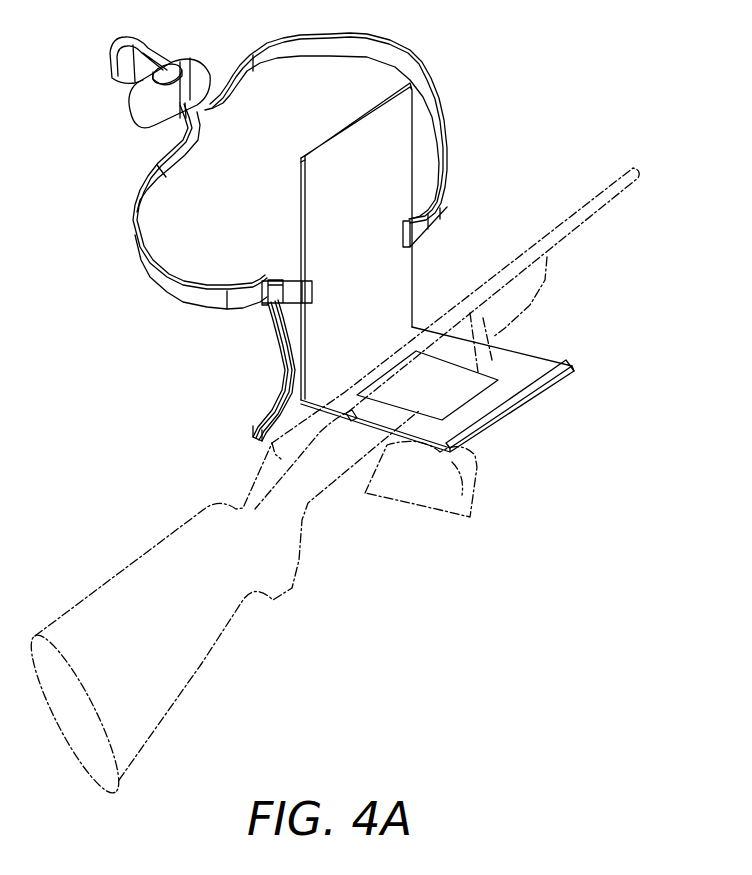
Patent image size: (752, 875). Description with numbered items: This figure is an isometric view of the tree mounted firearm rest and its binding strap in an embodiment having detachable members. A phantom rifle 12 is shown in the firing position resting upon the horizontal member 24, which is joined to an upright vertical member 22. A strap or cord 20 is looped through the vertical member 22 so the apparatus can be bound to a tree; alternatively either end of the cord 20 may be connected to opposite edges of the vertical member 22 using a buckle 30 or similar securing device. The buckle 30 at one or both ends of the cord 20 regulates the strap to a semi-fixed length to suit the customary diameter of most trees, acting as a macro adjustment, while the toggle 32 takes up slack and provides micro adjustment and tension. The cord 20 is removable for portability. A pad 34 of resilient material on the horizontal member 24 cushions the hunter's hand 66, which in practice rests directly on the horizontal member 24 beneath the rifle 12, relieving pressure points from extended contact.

The rifle 12 is at (202, 664).
The strap or cord 20 is at (372, 47).
The vertical member 22 is at (322, 232).
The horizontal member 24 is at (520, 367).
The buckle 30 is at (263, 308).
The toggle 32 is at (135, 113).
The pad 34 is at (507, 393).
The hand 66 is at (548, 388).